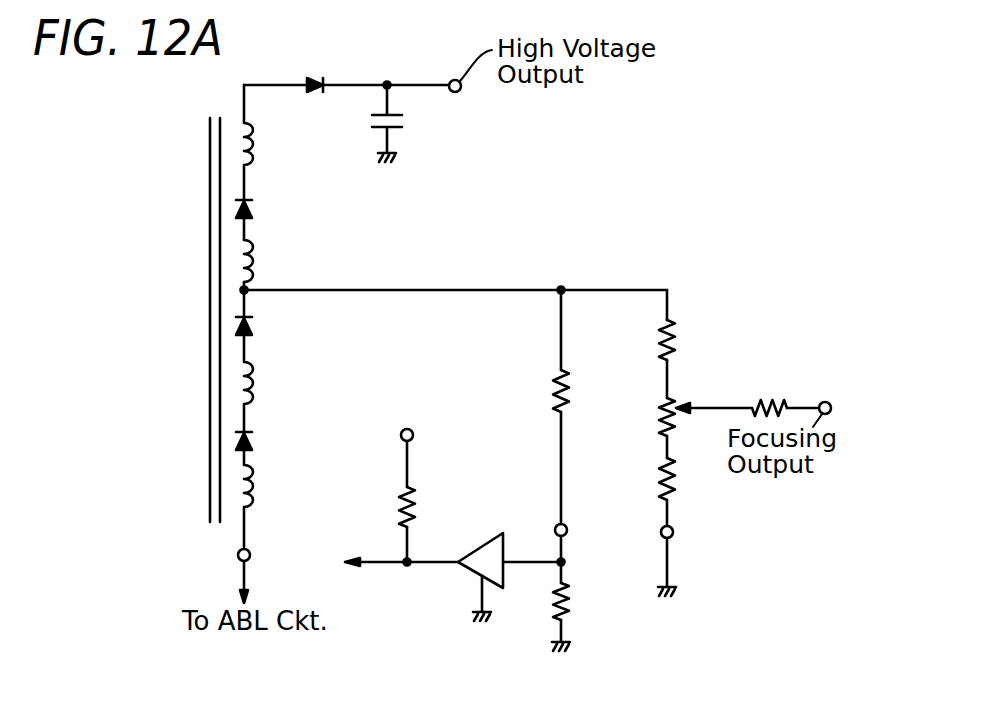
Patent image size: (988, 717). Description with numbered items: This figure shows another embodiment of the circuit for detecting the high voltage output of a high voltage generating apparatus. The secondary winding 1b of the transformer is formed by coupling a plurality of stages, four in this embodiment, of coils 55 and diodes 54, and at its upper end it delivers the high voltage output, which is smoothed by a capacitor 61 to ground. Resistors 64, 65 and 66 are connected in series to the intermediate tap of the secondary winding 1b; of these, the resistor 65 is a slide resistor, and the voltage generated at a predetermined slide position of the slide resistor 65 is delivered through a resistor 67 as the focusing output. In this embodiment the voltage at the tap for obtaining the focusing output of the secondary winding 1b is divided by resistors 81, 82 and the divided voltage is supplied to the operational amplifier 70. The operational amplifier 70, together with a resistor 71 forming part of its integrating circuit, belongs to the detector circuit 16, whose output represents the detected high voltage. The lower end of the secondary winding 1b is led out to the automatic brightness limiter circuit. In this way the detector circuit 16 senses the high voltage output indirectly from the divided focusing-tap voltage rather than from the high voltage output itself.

The secondary winding 1b is at (193, 216).
The diode 54 is at (256, 213).
The coil 55 is at (257, 263).
The capacitor 61 is at (404, 118).
The resistor 64 is at (675, 340).
The slide resistor 65 is at (656, 414).
The resistor 66 is at (660, 486).
The resistor 67 is at (764, 403).
The operational amplifier 70 is at (484, 540).
The resistor 71 is at (425, 504).
The resistor 81 is at (550, 393).
The resistor 82 is at (572, 600).
The detector circuit 16 is at (540, 600).